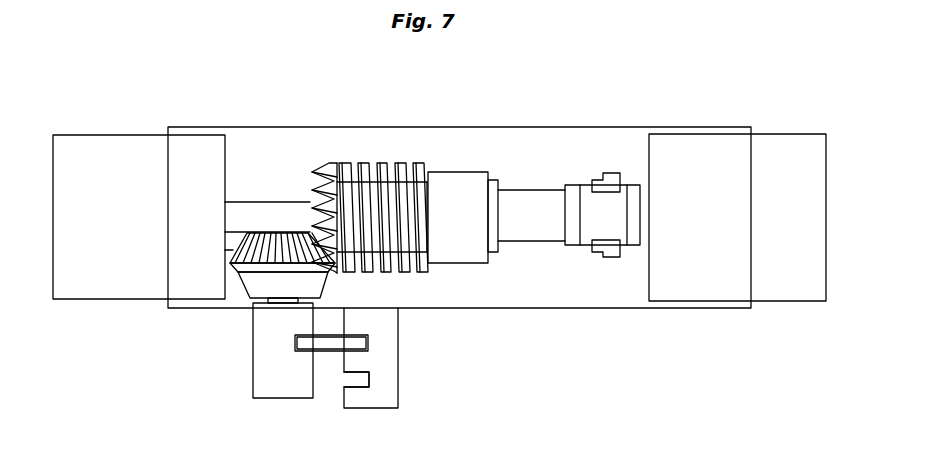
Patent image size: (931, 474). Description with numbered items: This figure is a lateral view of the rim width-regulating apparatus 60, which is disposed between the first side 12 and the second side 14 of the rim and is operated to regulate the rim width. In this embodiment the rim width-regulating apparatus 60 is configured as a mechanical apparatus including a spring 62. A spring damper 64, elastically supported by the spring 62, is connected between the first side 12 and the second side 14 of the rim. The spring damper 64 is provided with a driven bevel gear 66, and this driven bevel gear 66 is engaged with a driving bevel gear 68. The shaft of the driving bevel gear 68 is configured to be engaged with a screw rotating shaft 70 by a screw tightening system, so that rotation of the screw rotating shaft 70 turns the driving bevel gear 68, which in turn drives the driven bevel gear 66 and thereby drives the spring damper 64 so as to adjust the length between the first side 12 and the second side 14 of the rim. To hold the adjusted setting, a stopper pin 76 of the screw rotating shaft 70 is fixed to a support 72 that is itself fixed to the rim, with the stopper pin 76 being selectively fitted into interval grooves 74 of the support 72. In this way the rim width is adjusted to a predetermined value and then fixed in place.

The first side 12 is at (114, 162).
The second side 14 is at (787, 160).
The rim width-regulating apparatus 60 is at (565, 333).
The spring 62 is at (395, 165).
The spring damper 64 is at (263, 210).
The driven bevel gear 66 is at (326, 166).
The driving bevel gear 68 is at (225, 250).
The screw rotating shaft 70 is at (275, 365).
The support 72 is at (377, 397).
The interval grooves 74 is at (360, 375).
The stopper pin 76 is at (365, 338).